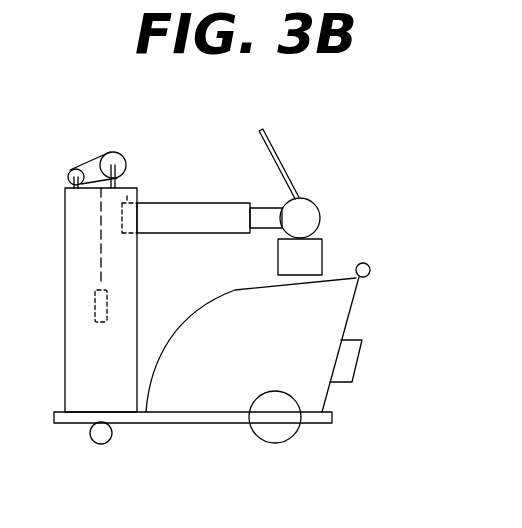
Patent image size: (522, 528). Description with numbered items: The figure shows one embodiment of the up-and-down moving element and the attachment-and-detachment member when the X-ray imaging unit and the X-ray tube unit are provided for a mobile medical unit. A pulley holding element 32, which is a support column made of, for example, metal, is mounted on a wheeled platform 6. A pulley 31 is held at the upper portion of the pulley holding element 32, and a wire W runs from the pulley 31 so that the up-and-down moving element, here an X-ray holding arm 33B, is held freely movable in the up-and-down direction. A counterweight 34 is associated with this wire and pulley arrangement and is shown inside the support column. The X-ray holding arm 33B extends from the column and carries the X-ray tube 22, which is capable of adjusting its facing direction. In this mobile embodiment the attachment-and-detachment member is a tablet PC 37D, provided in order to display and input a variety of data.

The wheeled platform 6 is at (352, 308).
The X-ray tube 22 is at (316, 218).
The pulley 31 is at (117, 158).
The pulley holding element 32 is at (70, 245).
The X-ray holding arm 33B is at (203, 207).
The counterweight 34 is at (95, 302).
The tablet PC 37D is at (282, 163).
The wire W is at (128, 187).